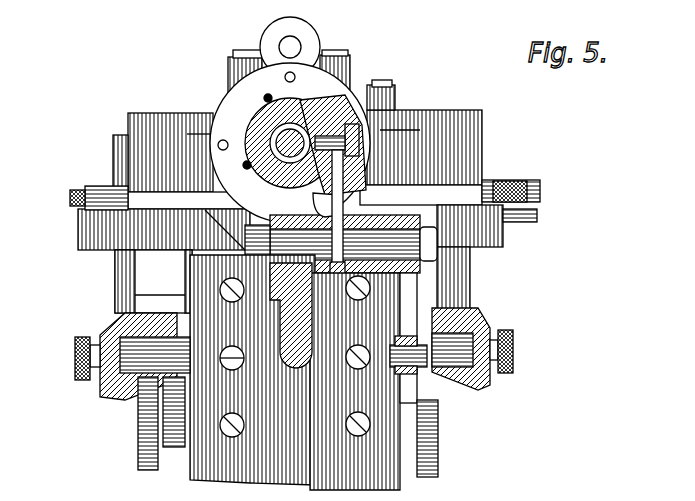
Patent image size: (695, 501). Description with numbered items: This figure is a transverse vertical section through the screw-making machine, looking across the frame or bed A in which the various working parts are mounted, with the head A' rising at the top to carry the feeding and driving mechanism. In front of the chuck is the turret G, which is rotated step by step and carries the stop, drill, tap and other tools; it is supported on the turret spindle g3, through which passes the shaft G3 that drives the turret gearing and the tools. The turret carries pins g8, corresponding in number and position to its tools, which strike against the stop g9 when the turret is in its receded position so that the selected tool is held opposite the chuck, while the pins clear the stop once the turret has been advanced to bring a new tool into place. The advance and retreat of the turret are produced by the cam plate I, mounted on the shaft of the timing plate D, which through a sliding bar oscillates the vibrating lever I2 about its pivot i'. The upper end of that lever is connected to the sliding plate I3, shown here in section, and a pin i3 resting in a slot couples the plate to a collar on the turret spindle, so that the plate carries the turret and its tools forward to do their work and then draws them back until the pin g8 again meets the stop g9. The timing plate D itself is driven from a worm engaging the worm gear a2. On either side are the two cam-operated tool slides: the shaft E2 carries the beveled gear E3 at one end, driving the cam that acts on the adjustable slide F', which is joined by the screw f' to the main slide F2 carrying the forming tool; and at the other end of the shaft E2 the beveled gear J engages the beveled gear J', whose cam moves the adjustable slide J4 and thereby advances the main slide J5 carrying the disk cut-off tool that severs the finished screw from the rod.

The head A' is at (265, 47).
The frame or bed A is at (252, 370).
The worm gear a2 is at (182, 442).
The timing plate D is at (145, 405).
The shaft E2 is at (118, 312).
The beveled gear E3 is at (100, 325).
The adjustable slide F' is at (141, 222).
The main slide F2 is at (157, 120).
The screw f' is at (99, 178).
The turret G is at (212, 157).
The shaft G3 is at (300, 138).
The turret spindle g3 is at (249, 170).
The pins g8 is at (225, 140).
The stop g9 is at (295, 356).
The cam plate I is at (437, 450).
The vibrating lever I2 is at (345, 207).
The sliding plate I3 is at (344, 150).
The pivot i' is at (429, 353).
The pin i3 is at (352, 135).
The beveled gear J is at (505, 329).
The beveled gear J' is at (462, 335).
The adjustable slide J4 is at (535, 206).
The main slide J5 is at (466, 172).